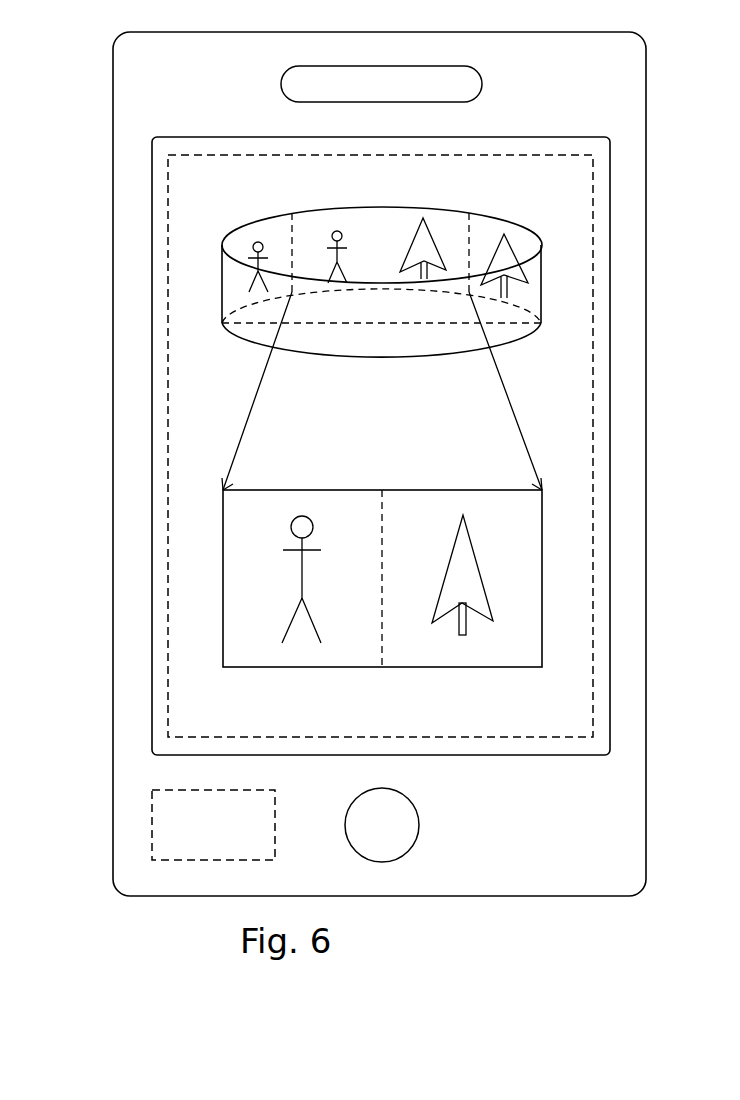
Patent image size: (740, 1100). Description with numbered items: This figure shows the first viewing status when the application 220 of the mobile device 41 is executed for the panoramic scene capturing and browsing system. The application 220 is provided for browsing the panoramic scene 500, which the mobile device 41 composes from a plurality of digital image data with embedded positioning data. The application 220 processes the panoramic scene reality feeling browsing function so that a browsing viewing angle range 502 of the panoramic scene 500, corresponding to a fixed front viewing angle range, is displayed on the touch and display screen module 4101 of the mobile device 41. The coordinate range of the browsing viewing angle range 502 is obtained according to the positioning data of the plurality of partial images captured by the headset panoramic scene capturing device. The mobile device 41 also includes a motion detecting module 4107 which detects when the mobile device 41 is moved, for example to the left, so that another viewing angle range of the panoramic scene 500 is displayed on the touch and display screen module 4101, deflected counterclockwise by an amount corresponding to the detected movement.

The mobile device 41 is at (113, 46).
The touch and display screen module 4101 is at (152, 237).
The application 220 is at (168, 607).
The panoramic scene 500 is at (222, 305).
The browsing viewing angle range 502 is at (210, 568).
The motion detecting module 4107 is at (152, 790).